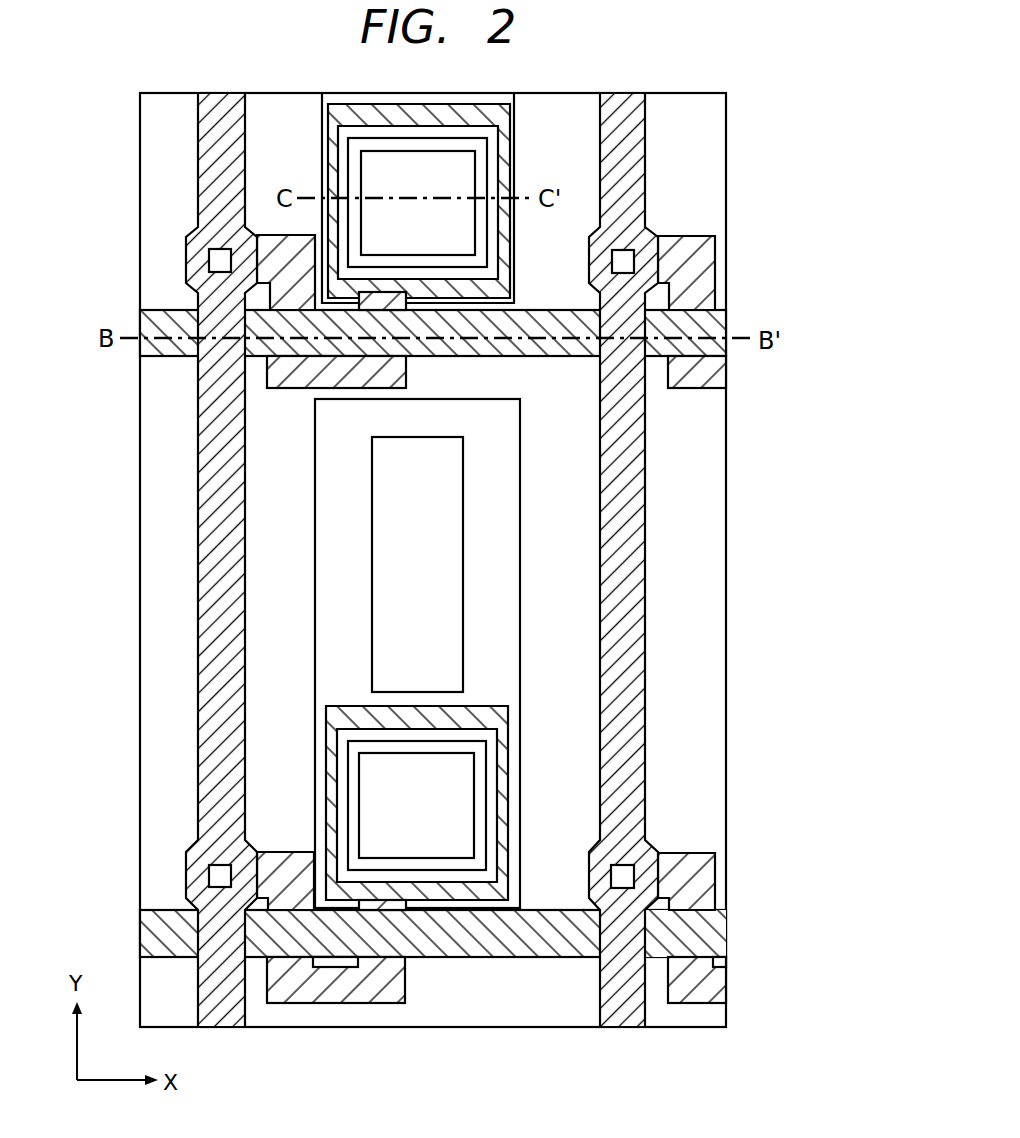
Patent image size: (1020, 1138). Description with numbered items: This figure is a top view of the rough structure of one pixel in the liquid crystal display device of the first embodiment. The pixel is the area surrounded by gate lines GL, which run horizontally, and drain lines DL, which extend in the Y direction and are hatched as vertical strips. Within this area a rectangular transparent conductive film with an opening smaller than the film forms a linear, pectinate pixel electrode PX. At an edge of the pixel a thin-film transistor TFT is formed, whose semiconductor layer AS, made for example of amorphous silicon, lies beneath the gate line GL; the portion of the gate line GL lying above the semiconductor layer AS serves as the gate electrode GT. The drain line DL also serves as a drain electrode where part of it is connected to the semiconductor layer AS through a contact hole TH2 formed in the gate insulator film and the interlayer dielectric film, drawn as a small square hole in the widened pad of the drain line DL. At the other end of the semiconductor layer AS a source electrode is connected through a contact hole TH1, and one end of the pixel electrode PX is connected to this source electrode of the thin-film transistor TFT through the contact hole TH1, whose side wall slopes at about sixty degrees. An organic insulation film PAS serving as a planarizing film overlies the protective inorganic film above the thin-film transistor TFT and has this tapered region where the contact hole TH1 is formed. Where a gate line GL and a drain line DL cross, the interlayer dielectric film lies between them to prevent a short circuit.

The drain line DL is at (635, 205).
The organic insulation film PAS is at (565, 505).
The pixel electrode PX is at (495, 608).
The contact hole TH1 is at (377, 807).
The contact hole TH2 is at (208, 873).
The gate electrode GT is at (708, 939).
The semiconductor layer AS is at (337, 993).
The thin-film transistor TFT is at (369, 973).
The gate line GL is at (490, 940).